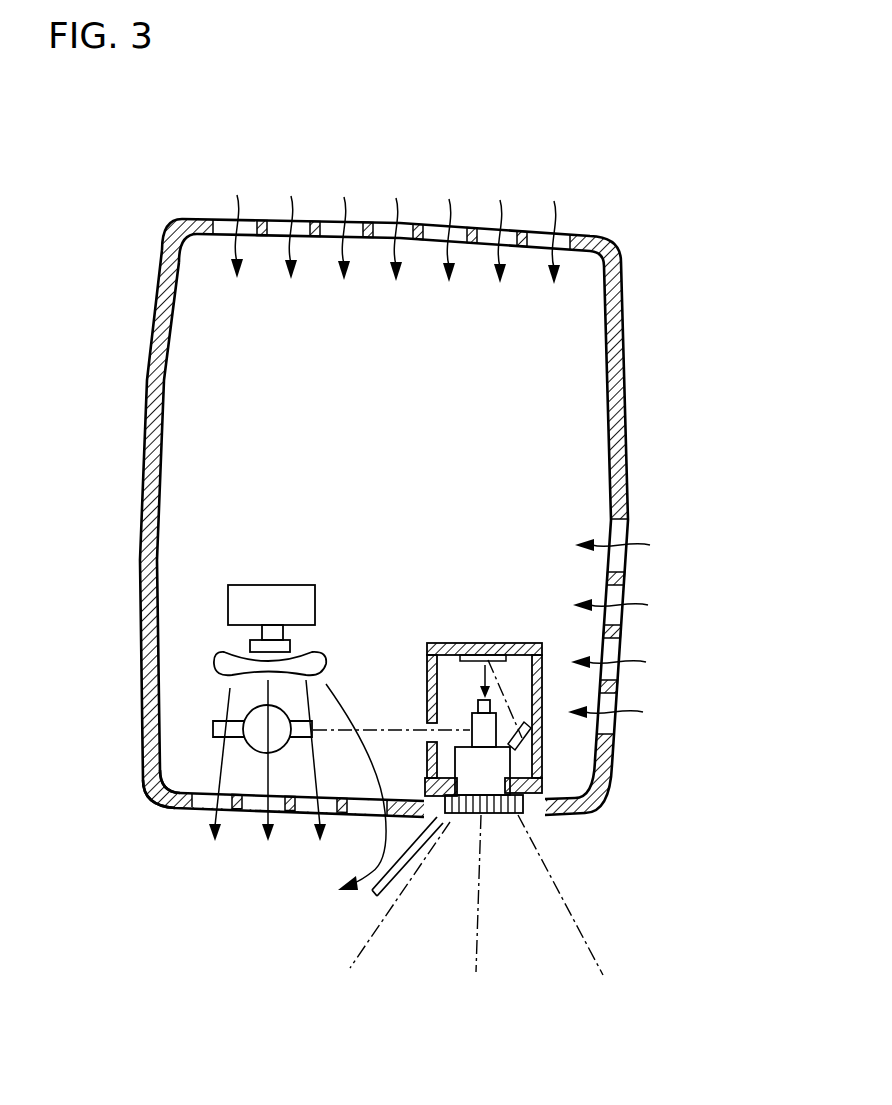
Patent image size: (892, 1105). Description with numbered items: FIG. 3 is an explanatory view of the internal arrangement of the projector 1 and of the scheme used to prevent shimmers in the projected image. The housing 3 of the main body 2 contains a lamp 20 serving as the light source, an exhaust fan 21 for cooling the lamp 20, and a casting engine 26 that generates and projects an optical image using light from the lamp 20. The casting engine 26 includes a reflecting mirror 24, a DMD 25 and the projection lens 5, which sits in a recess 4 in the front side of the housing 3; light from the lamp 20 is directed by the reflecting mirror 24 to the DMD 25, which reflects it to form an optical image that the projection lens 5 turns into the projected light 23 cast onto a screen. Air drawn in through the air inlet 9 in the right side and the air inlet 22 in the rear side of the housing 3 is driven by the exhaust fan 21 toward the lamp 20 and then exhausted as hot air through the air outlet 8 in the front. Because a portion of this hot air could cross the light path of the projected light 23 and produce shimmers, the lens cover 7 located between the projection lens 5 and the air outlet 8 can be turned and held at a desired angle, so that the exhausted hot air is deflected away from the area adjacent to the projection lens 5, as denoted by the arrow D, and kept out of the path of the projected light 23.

The projector 1 is at (357, 119).
The main body 2 is at (140, 367).
The housing 3 is at (143, 760).
The recess 4 is at (535, 824).
The projection lens 5 is at (495, 818).
The lens cover 7 is at (374, 893).
The air outlet 8 is at (240, 835).
The air inlet 9 is at (638, 632).
The lamp 20 is at (214, 724).
The exhaust fan 21 is at (226, 656).
The air inlet 22 is at (468, 212).
The projected light 23 is at (395, 904).
The reflecting mirror 24 is at (528, 740).
The DMD 25 is at (427, 670).
The casting engine 26 is at (479, 643).
The arrow D is at (345, 876).